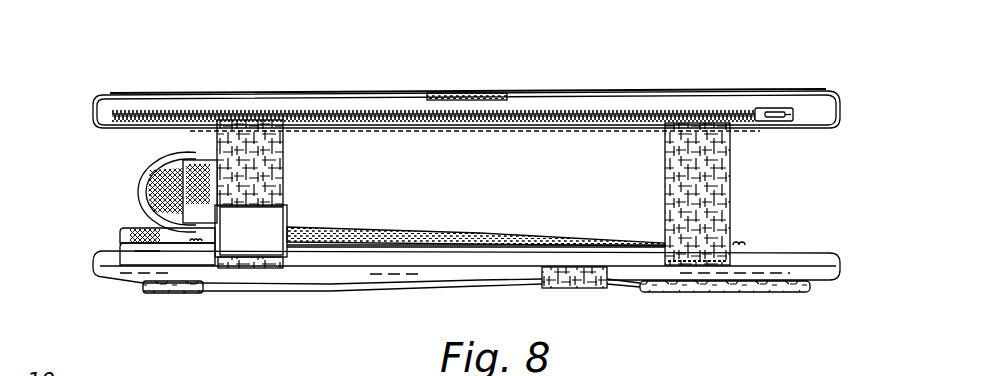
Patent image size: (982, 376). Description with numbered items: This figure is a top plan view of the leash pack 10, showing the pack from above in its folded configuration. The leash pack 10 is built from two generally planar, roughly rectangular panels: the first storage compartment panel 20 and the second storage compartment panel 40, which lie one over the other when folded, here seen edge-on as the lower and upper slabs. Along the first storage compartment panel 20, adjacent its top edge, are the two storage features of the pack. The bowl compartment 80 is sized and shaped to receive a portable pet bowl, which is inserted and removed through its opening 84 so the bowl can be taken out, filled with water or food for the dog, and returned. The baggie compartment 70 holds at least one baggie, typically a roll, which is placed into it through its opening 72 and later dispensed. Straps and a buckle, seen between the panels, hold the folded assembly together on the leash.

The leash pack 10 is at (100, 58).
The second storage compartment panel 40 is at (382, 108).
The first storage compartment panel 20 is at (350, 265).
The bowl compartment 80 is at (255, 284).
The opening 84 is at (391, 314).
The baggie compartment 70 is at (730, 283).
The opening 72 is at (725, 319).